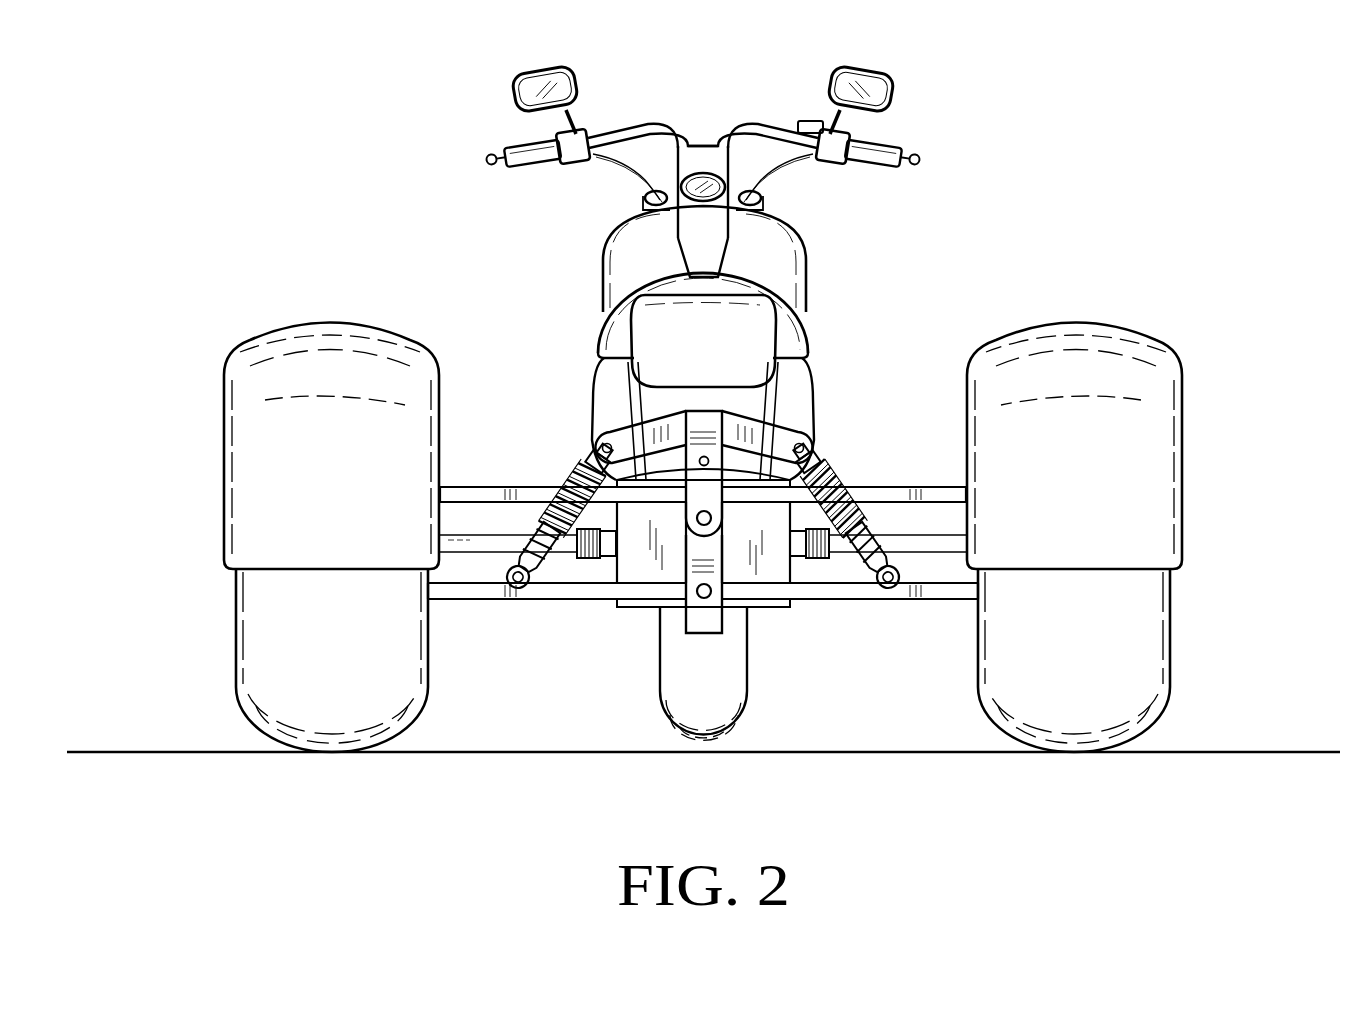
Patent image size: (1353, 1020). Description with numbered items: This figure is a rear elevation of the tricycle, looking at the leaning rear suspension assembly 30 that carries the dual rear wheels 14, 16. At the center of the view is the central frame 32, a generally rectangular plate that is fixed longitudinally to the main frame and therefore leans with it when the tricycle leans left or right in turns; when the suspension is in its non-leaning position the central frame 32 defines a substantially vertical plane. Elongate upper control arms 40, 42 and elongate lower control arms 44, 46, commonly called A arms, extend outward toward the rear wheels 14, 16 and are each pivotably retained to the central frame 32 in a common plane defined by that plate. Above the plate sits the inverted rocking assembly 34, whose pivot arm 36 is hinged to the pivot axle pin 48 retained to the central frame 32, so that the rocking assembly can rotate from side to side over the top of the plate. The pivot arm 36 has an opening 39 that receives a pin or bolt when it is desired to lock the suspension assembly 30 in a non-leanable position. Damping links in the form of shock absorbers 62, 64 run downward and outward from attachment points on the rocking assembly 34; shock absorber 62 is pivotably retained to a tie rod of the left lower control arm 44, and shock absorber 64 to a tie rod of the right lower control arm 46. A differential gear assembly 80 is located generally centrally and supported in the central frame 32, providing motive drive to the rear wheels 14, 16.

The rear wheel 14 is at (282, 630).
The rear wheel 16 is at (1117, 636).
The suspension assembly 30 is at (655, 620).
The central frame 32 is at (705, 615).
The inverted rocking assembly 34 is at (663, 427).
The pivot arm 36 is at (708, 476).
The opening 39 is at (698, 460).
The upper control arm 40 is at (487, 487).
The upper control arm 42 is at (926, 487).
The lower control arm 44 is at (485, 600).
The lower control arm 46 is at (876, 600).
The pivot axle pin 48 is at (708, 525).
The shock absorber 62 is at (560, 470).
The shock absorber 64 is at (846, 480).
The differential gear assembly 80 is at (640, 572).